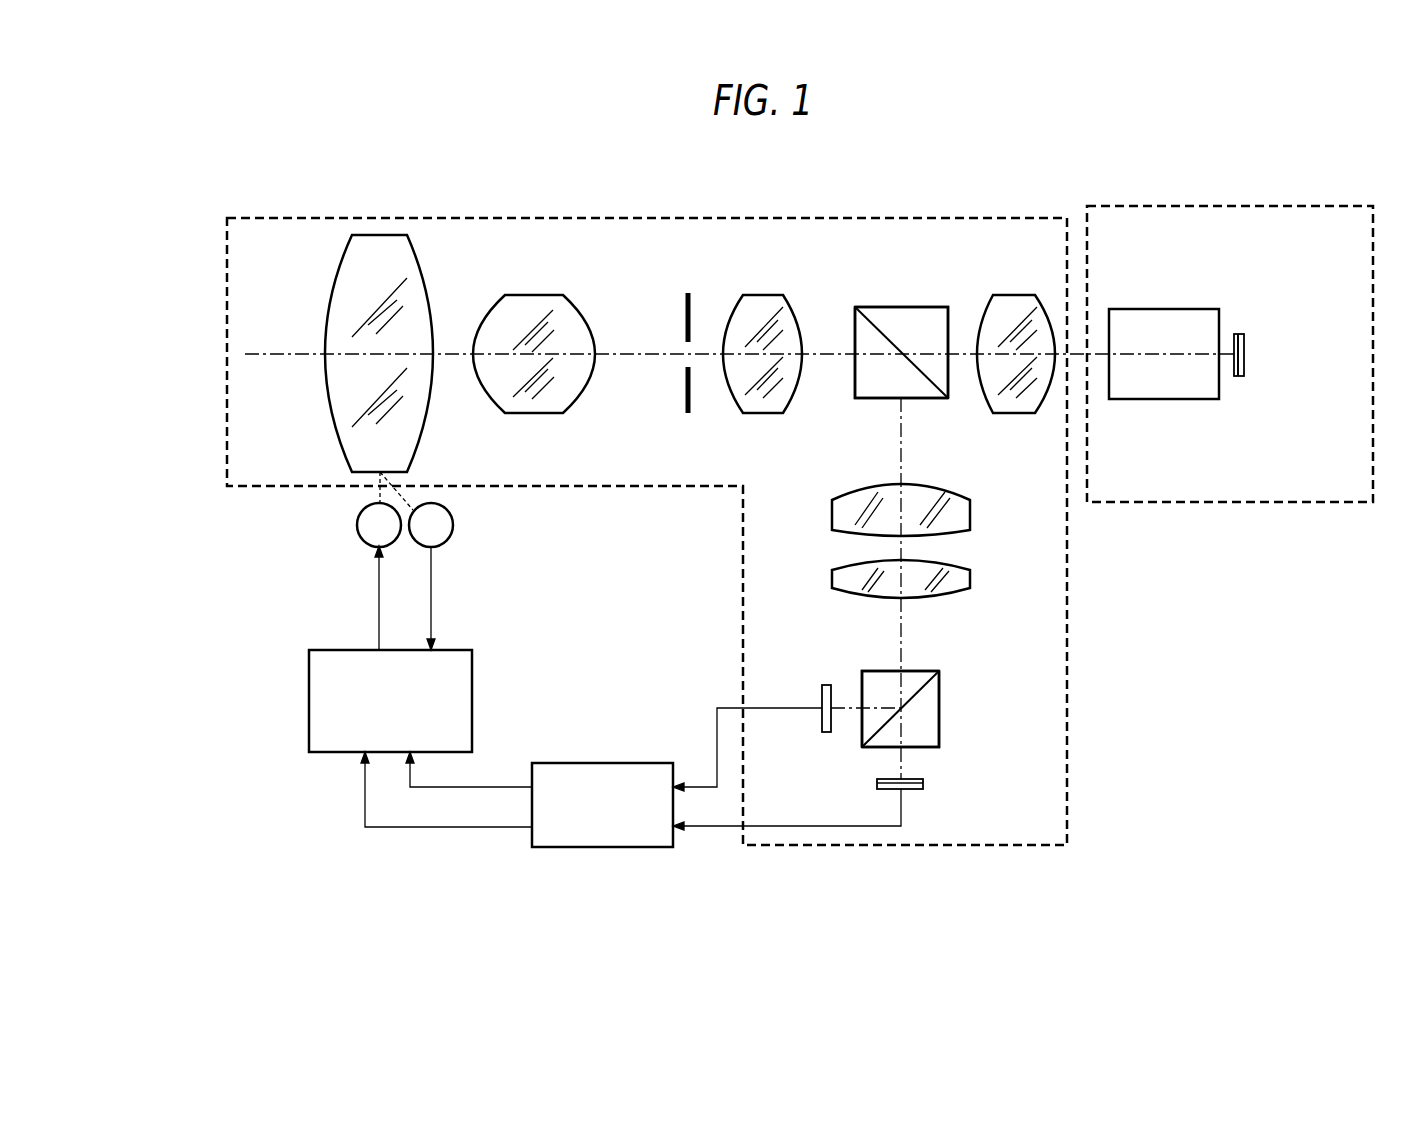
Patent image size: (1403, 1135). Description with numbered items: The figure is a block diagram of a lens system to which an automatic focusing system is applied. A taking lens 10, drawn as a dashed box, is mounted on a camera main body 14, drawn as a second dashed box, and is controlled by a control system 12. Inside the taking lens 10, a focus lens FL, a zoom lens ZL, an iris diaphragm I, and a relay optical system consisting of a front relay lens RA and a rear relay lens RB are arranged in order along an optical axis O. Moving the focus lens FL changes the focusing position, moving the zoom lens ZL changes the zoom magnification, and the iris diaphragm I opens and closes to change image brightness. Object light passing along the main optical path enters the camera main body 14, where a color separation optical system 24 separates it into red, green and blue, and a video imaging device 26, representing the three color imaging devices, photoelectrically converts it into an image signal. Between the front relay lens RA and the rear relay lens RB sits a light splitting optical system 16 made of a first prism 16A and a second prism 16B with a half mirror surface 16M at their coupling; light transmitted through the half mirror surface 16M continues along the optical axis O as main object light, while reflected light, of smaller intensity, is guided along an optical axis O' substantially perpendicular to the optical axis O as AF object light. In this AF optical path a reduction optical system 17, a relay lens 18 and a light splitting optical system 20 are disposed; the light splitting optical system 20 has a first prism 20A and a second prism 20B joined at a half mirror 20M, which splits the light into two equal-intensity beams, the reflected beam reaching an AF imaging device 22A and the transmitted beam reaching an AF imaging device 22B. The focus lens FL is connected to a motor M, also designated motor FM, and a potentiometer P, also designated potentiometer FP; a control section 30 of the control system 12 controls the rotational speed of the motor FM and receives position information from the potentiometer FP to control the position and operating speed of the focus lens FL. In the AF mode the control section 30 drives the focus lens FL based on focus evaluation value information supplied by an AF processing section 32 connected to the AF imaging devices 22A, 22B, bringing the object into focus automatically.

The taking lens 10 is at (882, 218).
The control system 12 is at (205, 661).
The camera main body 14 is at (1231, 206).
The light splitting optical system 16 is at (881, 345).
The half mirror surface 16M is at (877, 333).
The first prism 16A is at (866, 392).
The second prism 16B is at (935, 323).
The reduction optical system 17 is at (972, 512).
The relay lens 18 is at (972, 577).
The light splitting optical system 20 is at (926, 682).
The first prism 20A is at (875, 671).
The half mirror 20M is at (920, 685).
The second prism 20B is at (942, 710).
The AF imaging device 22A is at (820, 700).
The AF imaging device 22B is at (925, 785).
The color separation optical system 24 is at (1161, 309).
The video imaging device 26 is at (1245, 356).
The control section 30 is at (321, 755).
The AF processing section 32 is at (598, 850).
The focus lens FL is at (378, 235).
The zoom lens ZL is at (532, 295).
The iris diaphragm I is at (688, 293).
The front relay lens RA is at (757, 295).
The rear relay lens RB is at (1013, 295).
The optical axis O is at (269, 327).
The optical axis O' is at (924, 437).
The motor M is at (379, 525).
The potentiometer P is at (431, 525).
The motor FM is at (362, 545).
The potentiometer FP is at (447, 545).